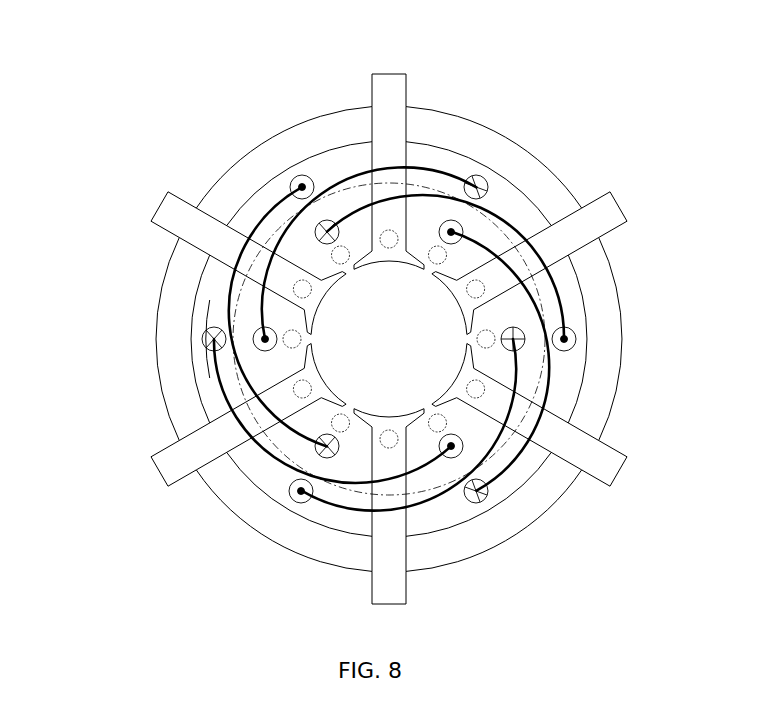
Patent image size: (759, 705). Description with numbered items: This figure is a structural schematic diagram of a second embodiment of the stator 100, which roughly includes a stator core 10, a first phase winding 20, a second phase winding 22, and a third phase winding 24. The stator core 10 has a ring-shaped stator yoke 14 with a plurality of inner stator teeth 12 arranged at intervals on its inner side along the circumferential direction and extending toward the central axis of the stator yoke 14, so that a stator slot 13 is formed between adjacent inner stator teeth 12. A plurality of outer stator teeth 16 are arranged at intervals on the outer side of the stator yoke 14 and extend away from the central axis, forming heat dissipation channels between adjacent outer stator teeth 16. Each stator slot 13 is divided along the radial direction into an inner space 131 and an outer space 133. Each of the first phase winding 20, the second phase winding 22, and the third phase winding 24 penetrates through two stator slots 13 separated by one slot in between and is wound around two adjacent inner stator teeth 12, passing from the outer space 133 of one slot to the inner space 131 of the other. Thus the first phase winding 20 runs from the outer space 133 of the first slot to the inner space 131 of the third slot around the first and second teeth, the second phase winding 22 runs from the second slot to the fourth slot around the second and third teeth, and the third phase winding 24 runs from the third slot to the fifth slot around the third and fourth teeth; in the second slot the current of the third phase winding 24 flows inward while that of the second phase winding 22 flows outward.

The stator 100 is at (375, 37).
The stator core 10 is at (464, 88).
The inner stator teeth 12 is at (388, 175).
The stator yoke 14 is at (497, 148).
The outer stator teeth 16 is at (613, 218).
The stator slot 13 is at (100, 303).
The inner space 131 is at (252, 315).
The outer space 133 is at (210, 383).
The first phase winding 20 is at (312, 175).
The second phase winding 22 is at (238, 302).
The third phase winding 24 is at (506, 208).